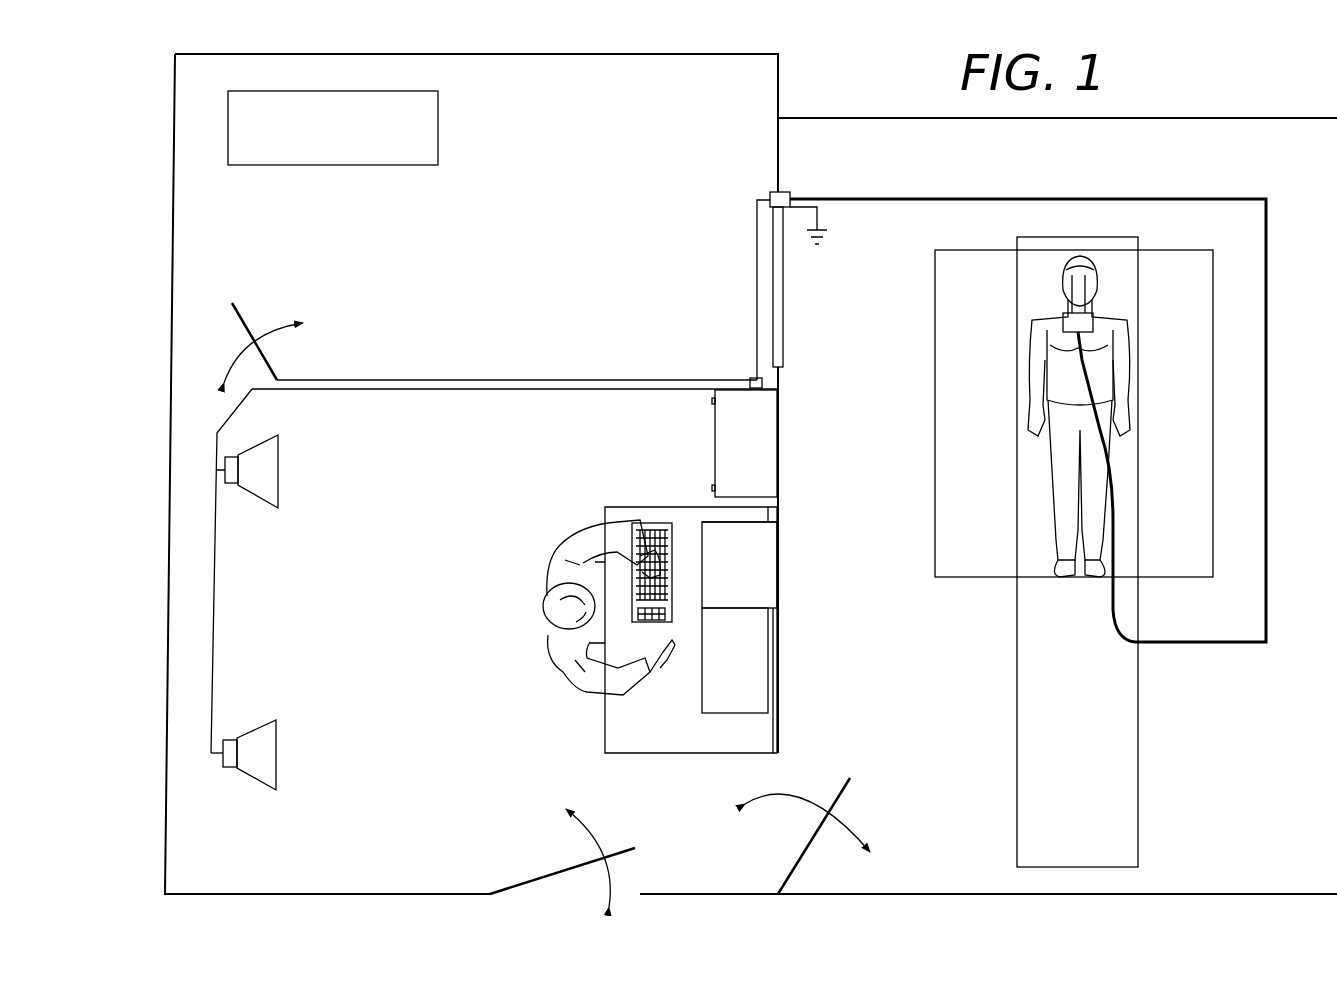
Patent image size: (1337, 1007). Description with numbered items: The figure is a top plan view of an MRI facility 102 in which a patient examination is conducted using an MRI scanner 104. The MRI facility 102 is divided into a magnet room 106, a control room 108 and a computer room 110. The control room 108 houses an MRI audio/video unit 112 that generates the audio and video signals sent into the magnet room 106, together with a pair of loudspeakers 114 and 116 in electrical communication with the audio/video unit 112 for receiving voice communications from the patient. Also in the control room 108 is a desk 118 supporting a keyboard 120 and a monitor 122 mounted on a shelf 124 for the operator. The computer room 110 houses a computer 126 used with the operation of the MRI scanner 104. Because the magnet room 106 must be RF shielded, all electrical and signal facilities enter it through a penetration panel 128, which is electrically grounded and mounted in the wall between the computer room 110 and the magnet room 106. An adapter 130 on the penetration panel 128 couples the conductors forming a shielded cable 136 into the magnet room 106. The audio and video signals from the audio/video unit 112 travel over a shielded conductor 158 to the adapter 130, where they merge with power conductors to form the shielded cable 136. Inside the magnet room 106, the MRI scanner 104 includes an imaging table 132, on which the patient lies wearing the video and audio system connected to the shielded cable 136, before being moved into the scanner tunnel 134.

The MRI facility 102 is at (784, 88).
The MRI scanner 104 is at (1000, 646).
The magnet room 106 is at (1258, 815).
The control room 108 is at (426, 831).
The computer room 110 is at (588, 103).
The MRI audio/video unit 112 is at (715, 441).
The loudspeaker 114 is at (280, 447).
The loudspeaker 116 is at (277, 735).
The desk 118 is at (615, 727).
The keyboard 120 is at (655, 535).
The monitor 122 is at (750, 564).
The shelf 124 is at (752, 700).
The computer 126 is at (345, 166).
The penetration panel 128 is at (784, 334).
The adapter 130 is at (772, 192).
The imaging table 132 is at (1045, 554).
The scanner tunnel 134 is at (1030, 286).
The shielded cable 136 is at (1167, 198).
The shielded conductor 158 is at (757, 288).